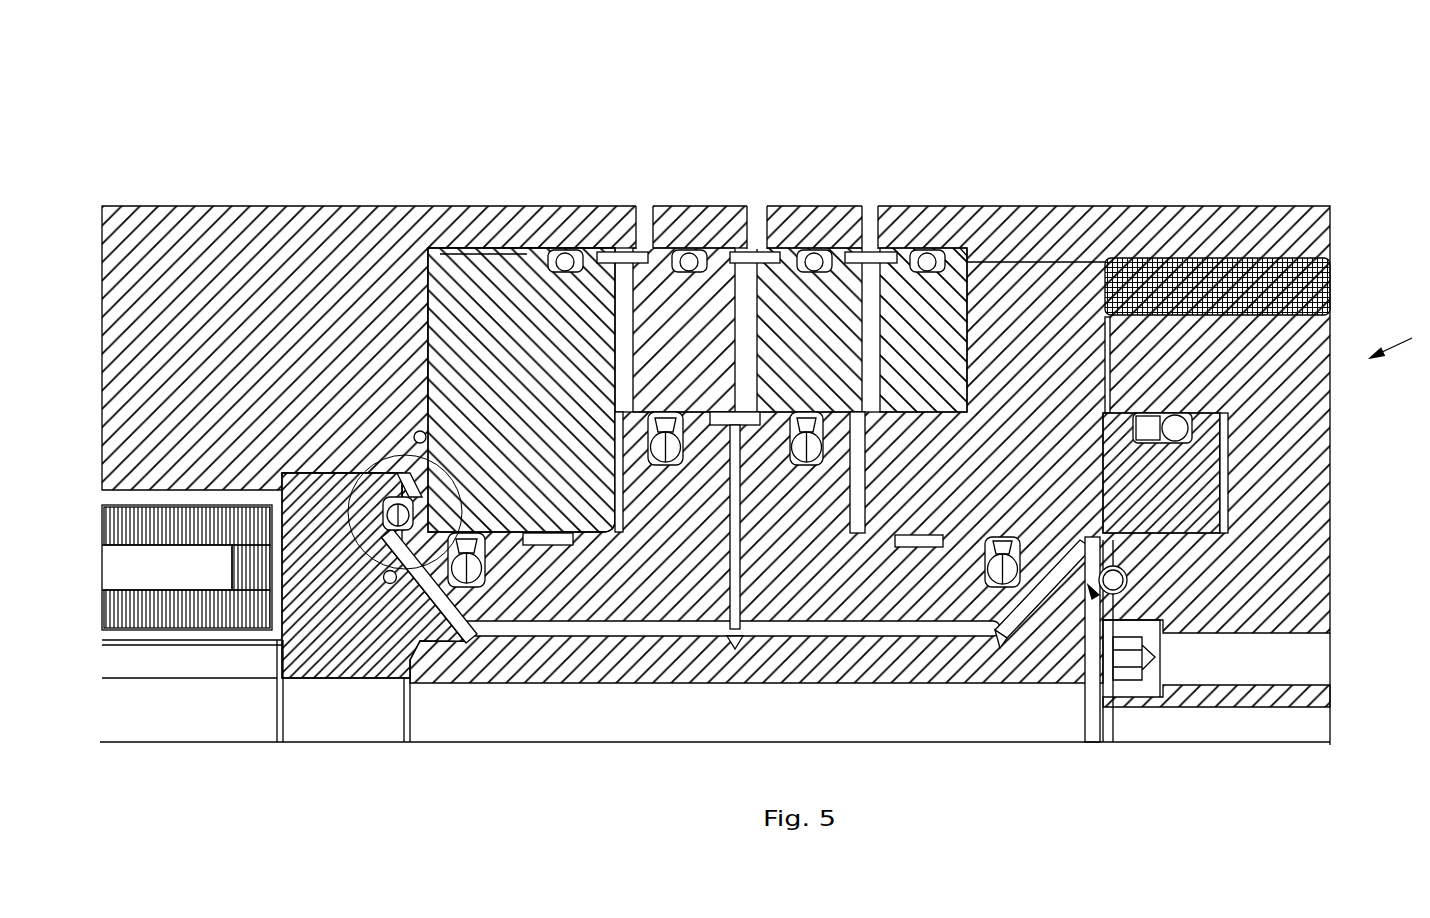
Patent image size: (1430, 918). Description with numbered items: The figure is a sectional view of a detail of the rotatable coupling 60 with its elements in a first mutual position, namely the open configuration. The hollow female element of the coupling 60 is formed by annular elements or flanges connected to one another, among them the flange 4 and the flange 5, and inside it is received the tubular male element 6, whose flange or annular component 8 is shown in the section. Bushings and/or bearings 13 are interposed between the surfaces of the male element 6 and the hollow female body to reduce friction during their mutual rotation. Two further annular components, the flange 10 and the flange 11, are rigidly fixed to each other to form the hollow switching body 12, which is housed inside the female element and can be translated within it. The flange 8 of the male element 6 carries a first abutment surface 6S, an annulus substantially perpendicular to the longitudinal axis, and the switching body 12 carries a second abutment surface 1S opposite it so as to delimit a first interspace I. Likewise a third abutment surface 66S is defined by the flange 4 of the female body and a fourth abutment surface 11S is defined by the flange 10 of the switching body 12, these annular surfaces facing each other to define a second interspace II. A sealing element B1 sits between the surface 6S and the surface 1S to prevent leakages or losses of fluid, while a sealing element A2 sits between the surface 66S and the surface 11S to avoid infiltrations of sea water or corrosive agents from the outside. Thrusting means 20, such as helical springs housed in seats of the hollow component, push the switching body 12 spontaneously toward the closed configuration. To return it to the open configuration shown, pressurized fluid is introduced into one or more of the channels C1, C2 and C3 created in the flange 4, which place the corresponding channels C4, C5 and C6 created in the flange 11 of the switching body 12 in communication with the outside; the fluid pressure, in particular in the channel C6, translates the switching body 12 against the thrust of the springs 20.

The annular element or flange 4 is at (533, 302).
The annular element or flange 5 is at (1175, 490).
The tubular male element 6 is at (1400, 341).
The flange or annular component 8 is at (1300, 600).
The annular component 10 is at (338, 640).
The annular component 11 is at (605, 535).
The hollow switching body 12 is at (703, 712).
The bushings and/or bearings 13 is at (1305, 280).
The thrusting means 20 is at (145, 605).
The coupling 60 is at (958, 120).
The sealing element A2 is at (282, 640).
The sealing element B1 is at (1122, 595).
The channel C1 is at (648, 240).
The channel C2 is at (752, 235).
The channel C3 is at (868, 235).
The channel C4 is at (600, 650).
The channel C5 is at (733, 608).
The channel C6 is at (865, 505).
The first abutment surface 6S is at (1030, 622).
The second abutment surface 1S is at (1092, 597).
The fourth abutment surface 11S is at (402, 478).
The third abutment surface 66S is at (422, 478).
The first interspace I is at (1092, 703).
The second interspace II is at (390, 584).